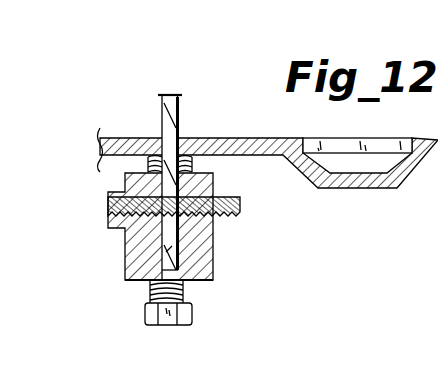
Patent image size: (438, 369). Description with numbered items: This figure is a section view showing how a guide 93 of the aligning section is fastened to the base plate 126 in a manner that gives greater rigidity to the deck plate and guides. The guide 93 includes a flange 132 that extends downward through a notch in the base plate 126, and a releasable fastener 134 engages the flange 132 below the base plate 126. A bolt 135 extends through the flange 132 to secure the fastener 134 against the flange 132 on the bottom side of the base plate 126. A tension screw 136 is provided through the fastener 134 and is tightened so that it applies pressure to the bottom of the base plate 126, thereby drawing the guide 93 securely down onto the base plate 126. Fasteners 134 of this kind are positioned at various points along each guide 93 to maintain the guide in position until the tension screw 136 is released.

The base plate 126 is at (112, 138).
The guide 93 is at (247, 57).
The flange 132 is at (127, 280).
The releasable fastener 134 is at (216, 256).
The bolt 135 is at (242, 197).
The tension screw 136 is at (187, 300).